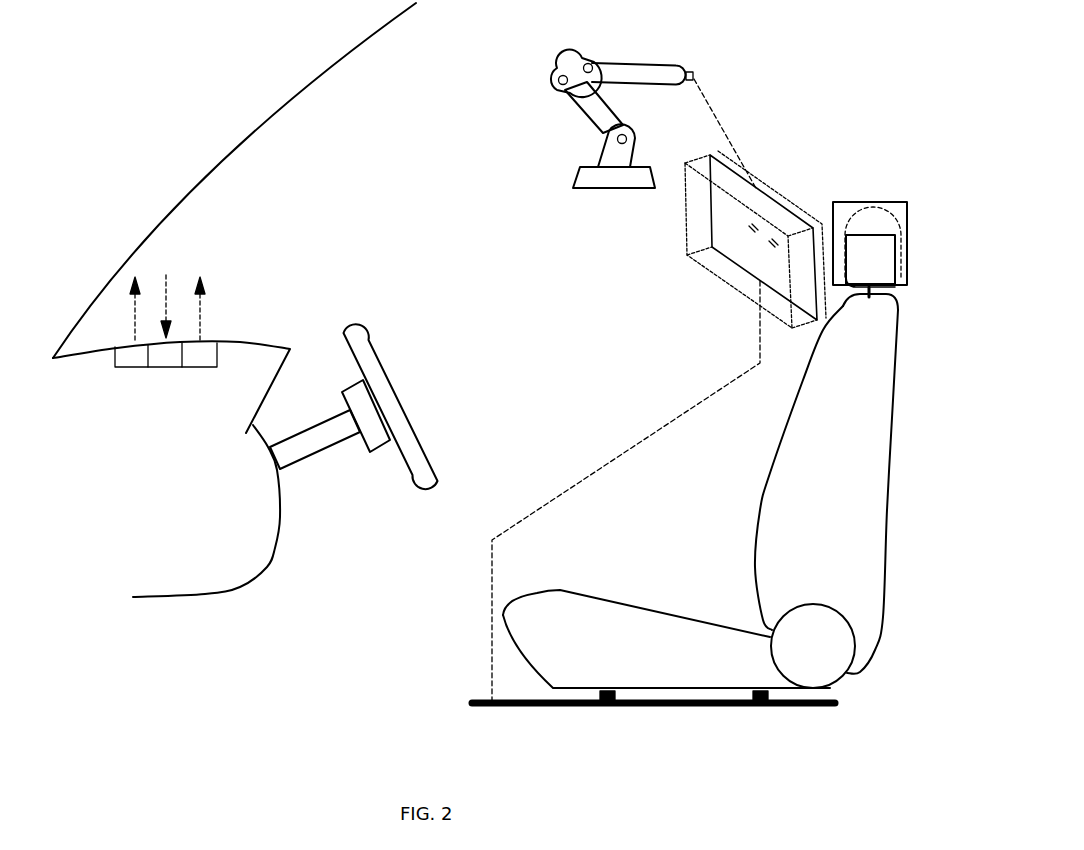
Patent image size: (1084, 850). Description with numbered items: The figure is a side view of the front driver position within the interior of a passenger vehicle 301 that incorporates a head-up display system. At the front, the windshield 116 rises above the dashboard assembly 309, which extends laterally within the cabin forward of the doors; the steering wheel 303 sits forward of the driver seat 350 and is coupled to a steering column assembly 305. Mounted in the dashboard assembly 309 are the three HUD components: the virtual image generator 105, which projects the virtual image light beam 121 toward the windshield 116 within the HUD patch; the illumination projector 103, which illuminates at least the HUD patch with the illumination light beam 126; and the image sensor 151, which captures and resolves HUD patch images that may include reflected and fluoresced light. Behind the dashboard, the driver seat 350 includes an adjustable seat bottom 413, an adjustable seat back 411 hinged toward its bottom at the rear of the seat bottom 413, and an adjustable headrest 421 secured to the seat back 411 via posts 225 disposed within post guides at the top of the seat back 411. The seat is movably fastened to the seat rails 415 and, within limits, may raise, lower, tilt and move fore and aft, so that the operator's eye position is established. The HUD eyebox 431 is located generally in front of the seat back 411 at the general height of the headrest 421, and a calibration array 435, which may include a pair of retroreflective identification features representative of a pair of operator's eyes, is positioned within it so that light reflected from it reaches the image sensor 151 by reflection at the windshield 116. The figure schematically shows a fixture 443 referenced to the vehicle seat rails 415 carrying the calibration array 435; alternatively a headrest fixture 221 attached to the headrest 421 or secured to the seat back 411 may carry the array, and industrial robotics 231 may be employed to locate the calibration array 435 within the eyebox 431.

The windshield 116 is at (247, 148).
The illumination light beam 126 is at (200, 313).
The virtual image light beam 121 is at (133, 300).
The dashboard assembly 309 is at (240, 342).
The virtual image generator 105 is at (125, 360).
The image sensor 151 is at (162, 360).
The illumination projector 103 is at (210, 355).
The steering wheel 303 is at (415, 423).
The steering column assembly 305 is at (328, 450).
The passenger vehicle 301 is at (281, 637).
The industrial robotics 231 is at (590, 55).
The HUD eyebox 431 is at (700, 263).
The calibration array 435 is at (755, 257).
The headrest fixture 221 is at (838, 202).
The headrest 421 is at (882, 247).
The posts 225 is at (875, 291).
The seat back 411 is at (783, 478).
The seat bottom 413 is at (608, 618).
The seat rails 415 is at (567, 707).
The fixture 443 is at (567, 490).
The driver seat 350 is at (720, 528).